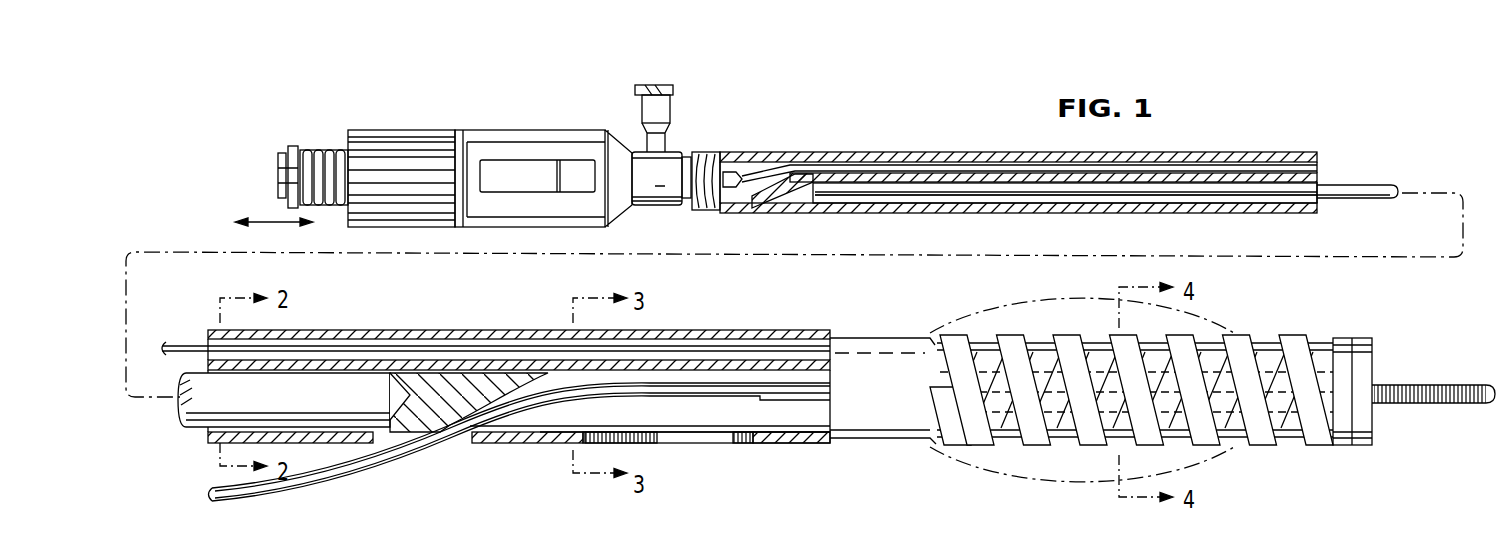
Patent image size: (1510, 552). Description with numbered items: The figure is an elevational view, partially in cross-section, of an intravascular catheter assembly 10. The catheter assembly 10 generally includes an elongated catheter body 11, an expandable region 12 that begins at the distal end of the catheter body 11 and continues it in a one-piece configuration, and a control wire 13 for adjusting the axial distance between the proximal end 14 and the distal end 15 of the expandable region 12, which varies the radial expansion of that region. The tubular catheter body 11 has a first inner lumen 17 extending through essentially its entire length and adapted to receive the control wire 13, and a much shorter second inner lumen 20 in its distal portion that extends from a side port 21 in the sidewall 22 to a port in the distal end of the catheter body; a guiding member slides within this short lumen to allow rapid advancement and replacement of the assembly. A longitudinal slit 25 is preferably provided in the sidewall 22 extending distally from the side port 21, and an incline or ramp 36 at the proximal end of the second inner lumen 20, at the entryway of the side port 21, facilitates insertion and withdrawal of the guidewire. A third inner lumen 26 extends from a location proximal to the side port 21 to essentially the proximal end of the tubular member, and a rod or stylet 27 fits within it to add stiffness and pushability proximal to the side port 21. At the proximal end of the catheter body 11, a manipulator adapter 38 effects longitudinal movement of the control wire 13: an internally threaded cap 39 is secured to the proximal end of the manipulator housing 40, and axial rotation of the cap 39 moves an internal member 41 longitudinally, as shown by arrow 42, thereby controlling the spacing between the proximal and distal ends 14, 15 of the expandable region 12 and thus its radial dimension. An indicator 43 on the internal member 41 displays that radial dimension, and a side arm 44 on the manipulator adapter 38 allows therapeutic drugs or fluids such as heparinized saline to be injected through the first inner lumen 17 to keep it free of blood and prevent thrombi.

The intravascular catheter assembly 10 is at (1427, 146).
The elongated catheter body 11 is at (872, 152).
The expandable region 12 is at (1283, 329).
The control wire 13 is at (1372, 177).
The proximal end 14 is at (950, 440).
The distal end 15 is at (1328, 442).
The first inner lumen 17 is at (1266, 165).
The second inner lumen 20 is at (575, 400).
The side port 21 is at (470, 440).
The sidewall 22 is at (740, 432).
The longitudinal slit 25 is at (668, 432).
The third inner lumen 26 is at (890, 190).
The rod or stylet 27 is at (1072, 193).
The incline or ramp 36 is at (517, 395).
The manipulator adapter 38 is at (446, 123).
The internally threaded cap 39 is at (370, 143).
The manipulator housing 40 is at (480, 130).
The internal member 41 is at (322, 150).
The arrow 42 is at (265, 222).
The indicator 43 is at (561, 172).
The side arm 44 is at (672, 118).